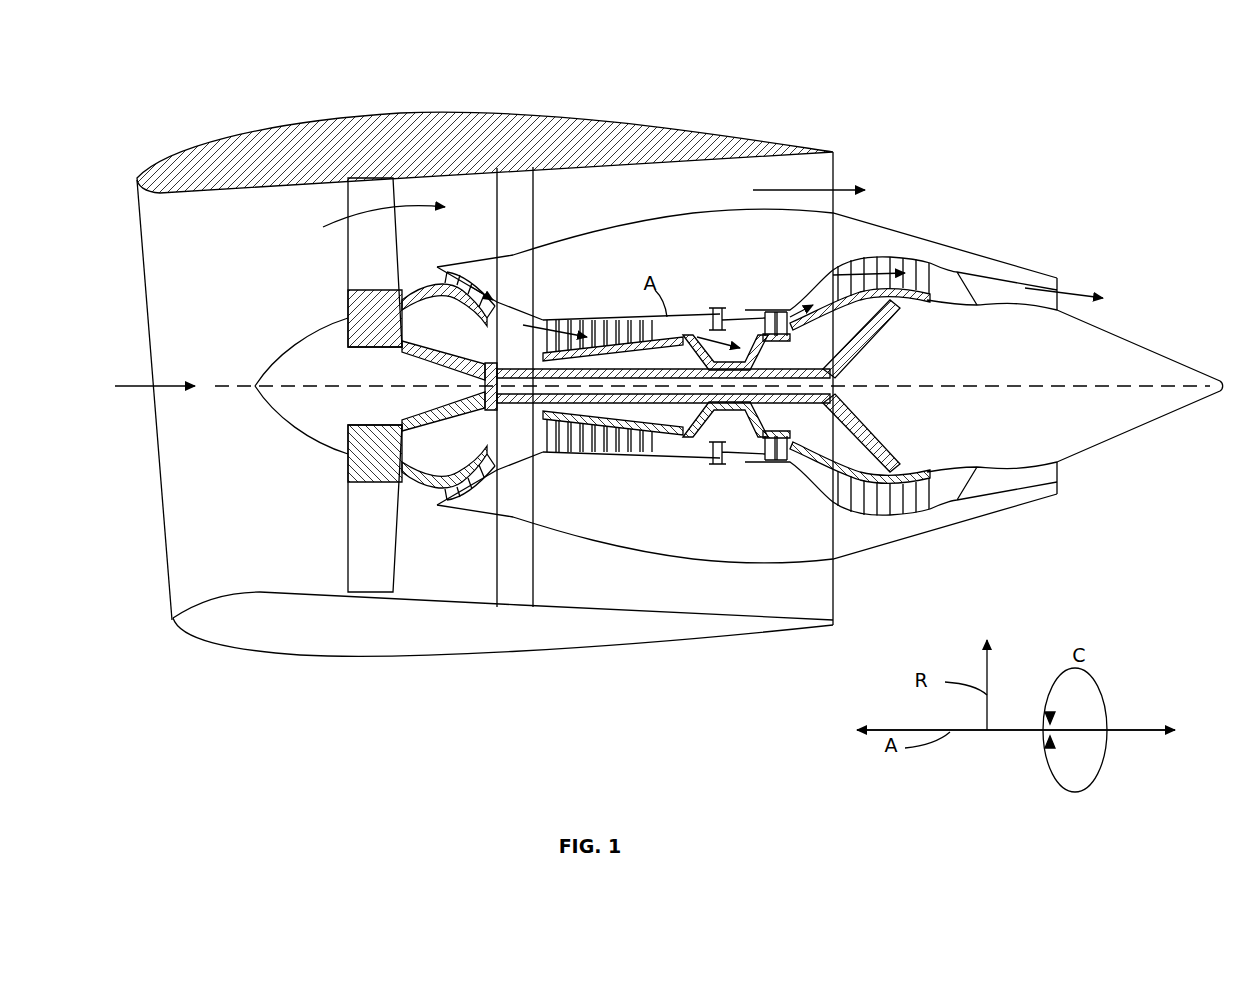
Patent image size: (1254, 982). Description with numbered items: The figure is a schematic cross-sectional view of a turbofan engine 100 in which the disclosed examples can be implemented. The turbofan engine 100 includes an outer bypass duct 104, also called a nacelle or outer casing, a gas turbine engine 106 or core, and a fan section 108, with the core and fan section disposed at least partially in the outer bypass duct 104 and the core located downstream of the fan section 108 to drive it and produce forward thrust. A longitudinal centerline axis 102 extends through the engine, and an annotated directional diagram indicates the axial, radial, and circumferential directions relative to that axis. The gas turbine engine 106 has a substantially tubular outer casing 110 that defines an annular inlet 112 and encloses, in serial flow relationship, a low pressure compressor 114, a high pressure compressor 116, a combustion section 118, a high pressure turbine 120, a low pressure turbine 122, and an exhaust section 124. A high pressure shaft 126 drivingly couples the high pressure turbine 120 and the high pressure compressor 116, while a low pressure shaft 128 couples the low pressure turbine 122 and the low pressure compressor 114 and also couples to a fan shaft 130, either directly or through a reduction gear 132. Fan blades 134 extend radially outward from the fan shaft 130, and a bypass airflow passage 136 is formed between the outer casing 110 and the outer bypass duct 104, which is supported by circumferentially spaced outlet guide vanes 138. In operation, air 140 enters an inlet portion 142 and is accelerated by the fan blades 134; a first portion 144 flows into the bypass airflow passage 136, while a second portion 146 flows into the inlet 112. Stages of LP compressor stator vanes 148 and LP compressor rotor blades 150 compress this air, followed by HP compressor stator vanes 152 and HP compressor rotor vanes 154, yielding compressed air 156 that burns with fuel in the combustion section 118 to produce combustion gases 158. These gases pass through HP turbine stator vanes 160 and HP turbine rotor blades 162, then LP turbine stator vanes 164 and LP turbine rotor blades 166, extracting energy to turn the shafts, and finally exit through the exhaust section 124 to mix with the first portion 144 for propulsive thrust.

The turbofan engine 100 is at (975, 120).
The centerline axis 102 is at (985, 385).
The outer bypass duct 104 is at (400, 113).
The gas turbine engine 106 is at (665, 262).
The fan section 108 is at (270, 252).
The outer casing 110 is at (680, 548).
The annular inlet 112 is at (440, 495).
The low pressure compressor 114 is at (498, 465).
The high pressure compressor 116 is at (573, 460).
The combustion section 118 is at (737, 455).
The high pressure turbine 120 is at (797, 443).
The low pressure turbine 122 is at (918, 513).
The exhaust section 124 is at (1067, 283).
The high pressure shaft 126 is at (783, 347).
The low pressure shaft 128 is at (497, 370).
The fan shaft 130 is at (395, 355).
The reduction gear 132 is at (483, 437).
The fan blades 134 is at (348, 520).
The bypass airflow passage 136 is at (661, 188).
The outlet guide vanes 138 is at (740, 130).
The air 140 is at (163, 383).
The inlet portion 142 is at (170, 596).
The first portion of the air 144 is at (770, 190).
The second portion of the air 146 is at (420, 270).
The LP compressor stator vanes 148 is at (460, 505).
The LP compressor rotor blades 150 is at (487, 497).
The HP compressor stator vanes 152 is at (667, 447).
The HP compressor rotor vanes 154 is at (670, 450).
The compressed air 156 is at (705, 333).
The combustion gases 158 is at (778, 318).
The HP turbine stator vanes 160 is at (770, 462).
The HP turbine rotor blades 162 is at (778, 432).
The LP turbine stator vanes 164 is at (833, 267).
The LP turbine rotor blades 166 is at (853, 260).